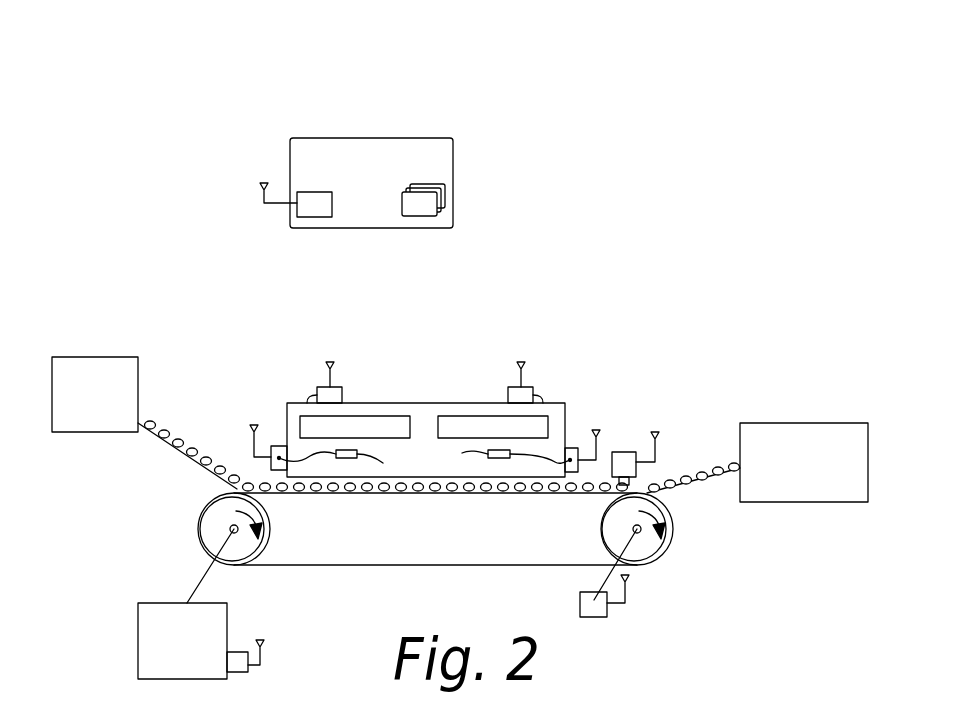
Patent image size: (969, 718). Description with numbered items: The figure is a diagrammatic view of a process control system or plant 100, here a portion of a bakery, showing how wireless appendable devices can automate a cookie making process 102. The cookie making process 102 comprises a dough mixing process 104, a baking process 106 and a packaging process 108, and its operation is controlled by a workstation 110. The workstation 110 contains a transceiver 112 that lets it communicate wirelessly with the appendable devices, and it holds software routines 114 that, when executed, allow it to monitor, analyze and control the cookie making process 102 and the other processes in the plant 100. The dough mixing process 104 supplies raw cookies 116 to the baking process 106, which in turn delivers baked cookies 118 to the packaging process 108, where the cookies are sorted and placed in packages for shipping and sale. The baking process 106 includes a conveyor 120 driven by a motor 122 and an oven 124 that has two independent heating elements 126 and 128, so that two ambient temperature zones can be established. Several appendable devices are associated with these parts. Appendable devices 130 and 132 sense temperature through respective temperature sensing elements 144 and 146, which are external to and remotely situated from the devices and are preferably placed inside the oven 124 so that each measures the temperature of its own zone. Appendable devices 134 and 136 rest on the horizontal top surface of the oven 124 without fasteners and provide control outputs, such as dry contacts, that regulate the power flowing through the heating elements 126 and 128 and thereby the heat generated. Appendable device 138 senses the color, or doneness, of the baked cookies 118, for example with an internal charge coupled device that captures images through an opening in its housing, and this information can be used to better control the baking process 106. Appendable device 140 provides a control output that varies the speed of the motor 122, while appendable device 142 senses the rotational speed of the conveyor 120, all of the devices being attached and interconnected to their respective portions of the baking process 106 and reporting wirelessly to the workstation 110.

The process control system or plant 100 is at (567, 104).
The cookie making process 102 is at (531, 312).
The dough mixing process 104 is at (110, 357).
The baking process 106 is at (403, 334).
The packaging process 108 is at (772, 423).
The workstation 110 is at (431, 138).
The transceiver 112 is at (313, 217).
The software routines 114 is at (437, 201).
The raw cookies 116 is at (207, 452).
The baked cookies 118 is at (684, 466).
The conveyor 120 is at (385, 565).
The motor 122 is at (138, 637).
The oven 124 is at (565, 412).
The heating element 126 is at (375, 416).
The heating element 128 is at (476, 416).
The appendable device 130 is at (274, 446).
The appendable device 132 is at (575, 448).
The appendable device 134 is at (342, 399).
The appendable device 136 is at (528, 387).
The appendable device 138 is at (621, 452).
The appendable device 140 is at (238, 652).
The appendable device 142 is at (598, 617).
The temperature sensing element 144 is at (347, 461).
The temperature sensing element 146 is at (500, 454).